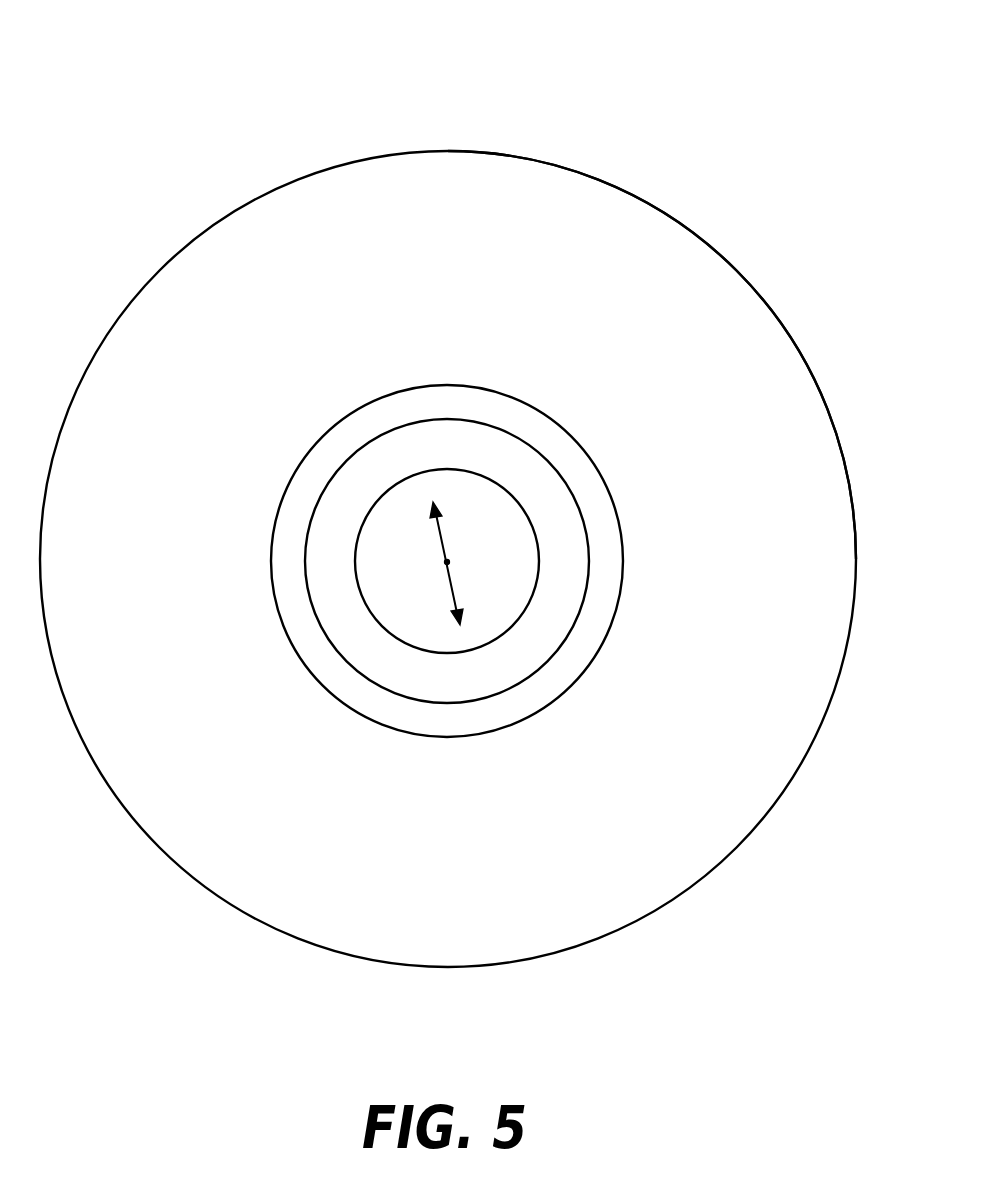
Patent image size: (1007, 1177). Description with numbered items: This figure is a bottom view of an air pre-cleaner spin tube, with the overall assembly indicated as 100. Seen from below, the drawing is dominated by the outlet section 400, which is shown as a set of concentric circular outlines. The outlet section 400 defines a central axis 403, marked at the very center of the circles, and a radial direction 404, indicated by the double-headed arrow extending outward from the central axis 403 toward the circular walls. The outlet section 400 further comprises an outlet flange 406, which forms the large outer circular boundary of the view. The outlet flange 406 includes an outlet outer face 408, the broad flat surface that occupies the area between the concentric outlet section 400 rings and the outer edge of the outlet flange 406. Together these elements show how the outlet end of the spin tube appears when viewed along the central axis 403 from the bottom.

The substrate 100 is at (589, 122).
The outlet flange 406 is at (672, 217).
The outlet section 400 is at (563, 607).
The radial direction 404 is at (453, 580).
The central axis 403 is at (447, 562).
The outlet outer face 408 is at (595, 816).